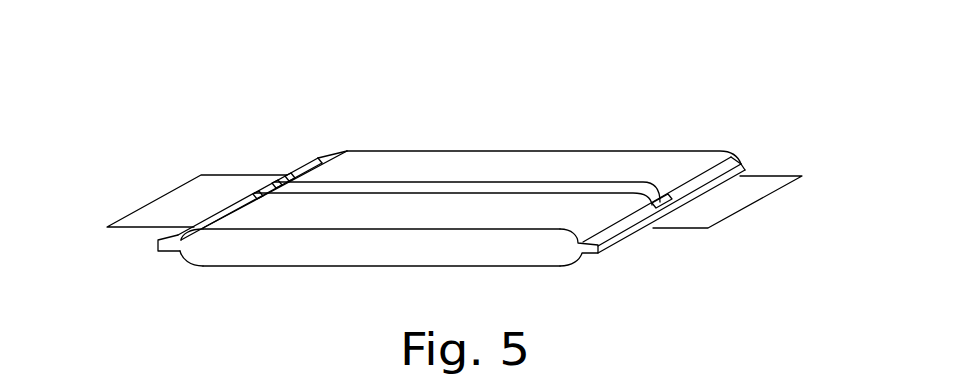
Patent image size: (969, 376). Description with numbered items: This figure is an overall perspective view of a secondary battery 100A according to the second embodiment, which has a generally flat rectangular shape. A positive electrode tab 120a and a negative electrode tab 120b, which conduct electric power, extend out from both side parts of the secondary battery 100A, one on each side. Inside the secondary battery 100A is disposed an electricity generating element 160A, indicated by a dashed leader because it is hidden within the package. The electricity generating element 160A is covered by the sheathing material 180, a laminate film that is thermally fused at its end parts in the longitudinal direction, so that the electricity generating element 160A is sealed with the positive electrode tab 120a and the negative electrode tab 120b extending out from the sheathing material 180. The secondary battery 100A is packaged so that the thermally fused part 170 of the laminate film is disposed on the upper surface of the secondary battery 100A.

The secondary battery 100A is at (318, 78).
The thermally fused part 170 is at (360, 183).
The electricity generating element 160A is at (512, 167).
The sheathing material 180 is at (695, 162).
The positive electrode tab 120a is at (167, 213).
The negative electrode tab 120b is at (737, 202).